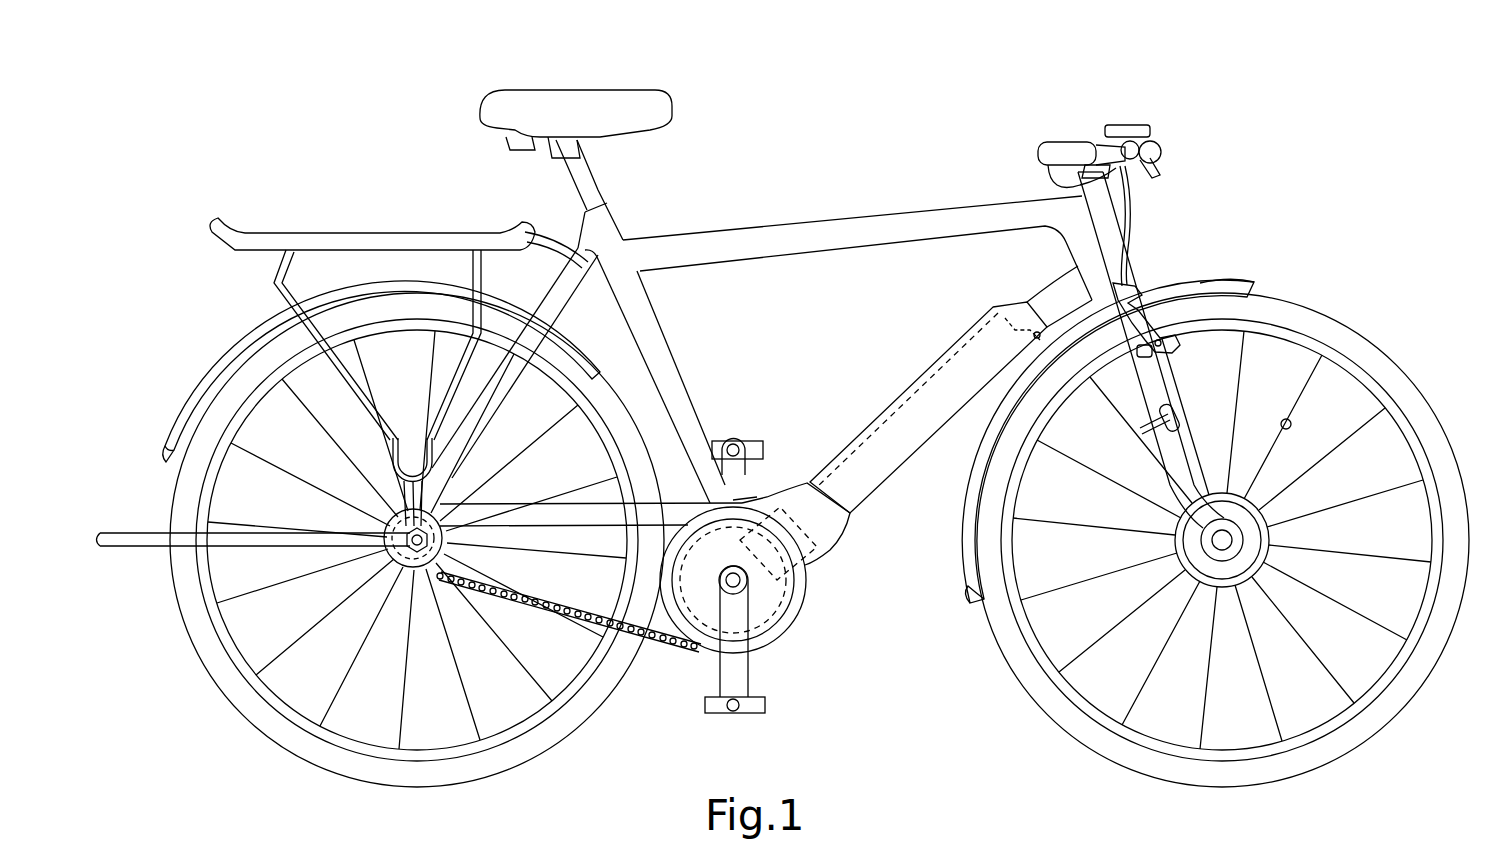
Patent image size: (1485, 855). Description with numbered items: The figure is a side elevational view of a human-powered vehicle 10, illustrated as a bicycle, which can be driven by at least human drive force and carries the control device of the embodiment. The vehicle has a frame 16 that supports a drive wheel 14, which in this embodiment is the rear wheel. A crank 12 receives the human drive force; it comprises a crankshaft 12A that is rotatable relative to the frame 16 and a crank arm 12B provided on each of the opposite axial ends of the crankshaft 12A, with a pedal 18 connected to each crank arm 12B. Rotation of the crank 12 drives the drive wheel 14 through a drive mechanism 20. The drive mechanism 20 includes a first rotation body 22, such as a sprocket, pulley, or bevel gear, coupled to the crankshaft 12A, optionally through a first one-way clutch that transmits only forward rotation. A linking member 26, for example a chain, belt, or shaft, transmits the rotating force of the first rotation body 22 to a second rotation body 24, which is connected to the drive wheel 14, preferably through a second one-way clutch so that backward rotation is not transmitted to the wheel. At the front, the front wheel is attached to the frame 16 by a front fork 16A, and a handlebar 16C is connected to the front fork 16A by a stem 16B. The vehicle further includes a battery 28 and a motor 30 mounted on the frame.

The human-powered vehicle 10 is at (1310, 137).
The crank 12 is at (822, 568).
The crankshaft 12A is at (742, 583).
The crank arm 12B is at (742, 673).
The drive wheel 14 is at (180, 496).
The frame 16 is at (770, 232).
The front fork 16A is at (1138, 385).
The stem 16B is at (1050, 152).
The handlebar 16C is at (1162, 150).
The pedal 18 is at (752, 440).
The drive mechanism 20 is at (867, 693).
The first rotation body 22 is at (812, 588).
The second rotation body 24 is at (384, 560).
The linking member 26 is at (653, 648).
The battery 28 is at (918, 380).
The motor 30 is at (830, 530).